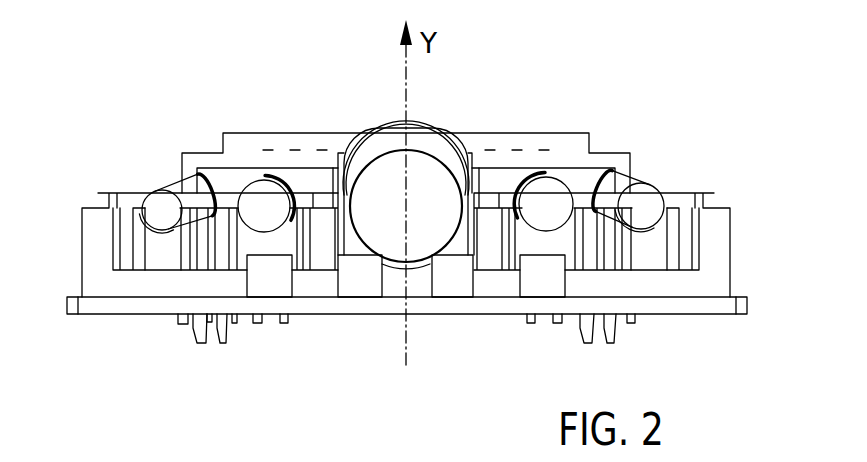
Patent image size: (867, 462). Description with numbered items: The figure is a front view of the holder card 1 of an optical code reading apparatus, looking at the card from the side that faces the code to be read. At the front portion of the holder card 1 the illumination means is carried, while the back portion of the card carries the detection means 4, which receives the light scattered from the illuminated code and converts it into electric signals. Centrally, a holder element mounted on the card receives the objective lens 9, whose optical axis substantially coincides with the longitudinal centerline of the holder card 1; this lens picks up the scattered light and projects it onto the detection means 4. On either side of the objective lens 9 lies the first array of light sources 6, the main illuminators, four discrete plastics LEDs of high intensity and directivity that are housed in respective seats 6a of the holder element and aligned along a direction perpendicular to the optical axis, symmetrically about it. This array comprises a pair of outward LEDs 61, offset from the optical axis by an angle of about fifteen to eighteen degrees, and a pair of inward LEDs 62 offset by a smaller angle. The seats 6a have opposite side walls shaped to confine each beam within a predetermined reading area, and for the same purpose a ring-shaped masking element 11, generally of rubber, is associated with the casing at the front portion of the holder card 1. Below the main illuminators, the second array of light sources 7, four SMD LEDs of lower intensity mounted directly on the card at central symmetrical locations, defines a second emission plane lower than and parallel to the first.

The holder card 1 is at (723, 314).
The ring-shaped masking element 11 is at (720, 230).
The detection means 4 is at (305, 145).
The objective lens 9 is at (424, 174).
The first array of light sources 6 is at (140, 182).
The outward LEDs 61 is at (163, 198).
The inward LEDs 62 is at (256, 198).
The seats 6a is at (247, 242).
The second array of light sources 7 is at (365, 280).